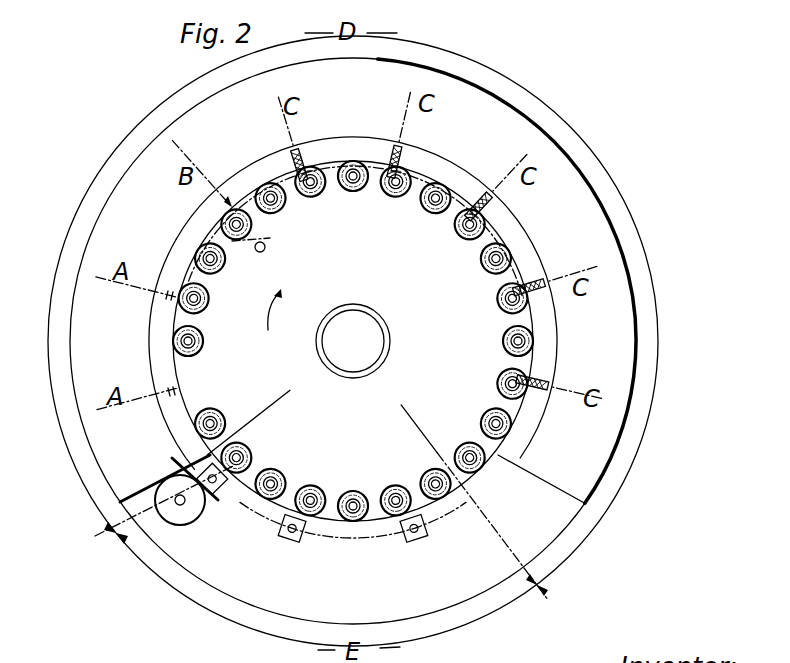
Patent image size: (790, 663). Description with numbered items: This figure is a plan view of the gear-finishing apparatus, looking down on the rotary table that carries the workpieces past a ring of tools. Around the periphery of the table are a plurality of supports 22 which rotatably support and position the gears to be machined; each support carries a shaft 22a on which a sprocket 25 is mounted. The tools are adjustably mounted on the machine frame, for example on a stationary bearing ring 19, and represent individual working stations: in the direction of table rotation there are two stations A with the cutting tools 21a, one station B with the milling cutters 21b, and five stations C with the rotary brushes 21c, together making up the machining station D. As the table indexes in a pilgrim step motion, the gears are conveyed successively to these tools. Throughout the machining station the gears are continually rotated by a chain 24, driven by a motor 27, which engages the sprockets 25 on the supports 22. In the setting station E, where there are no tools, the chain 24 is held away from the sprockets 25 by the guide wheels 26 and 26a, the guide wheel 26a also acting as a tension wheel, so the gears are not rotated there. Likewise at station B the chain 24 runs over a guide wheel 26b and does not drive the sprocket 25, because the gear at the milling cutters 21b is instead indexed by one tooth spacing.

The stationary bearing ring 19 is at (175, 128).
The cutting tools 21a is at (178, 390).
The milling cutters 21b is at (229, 203).
The rotary brushes 21c is at (300, 135).
The supports 22 is at (353, 341).
The shaft 22a is at (217, 352).
The chain 24 is at (417, 177).
The sprockets 25 is at (206, 323).
The guide wheels 26 is at (287, 540).
The guide wheel 26a is at (219, 491).
The guide wheel 26b is at (266, 247).
The motor 27 is at (172, 522).